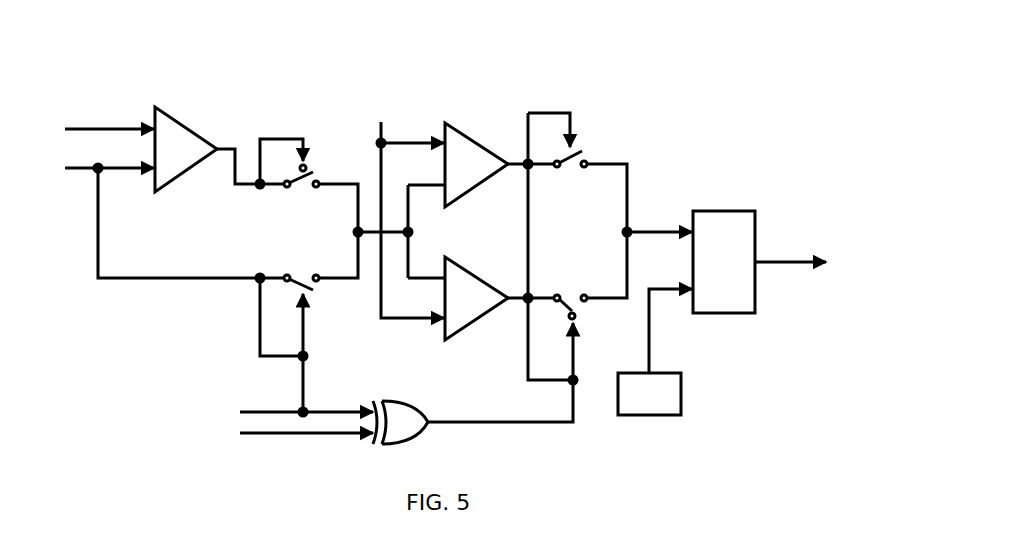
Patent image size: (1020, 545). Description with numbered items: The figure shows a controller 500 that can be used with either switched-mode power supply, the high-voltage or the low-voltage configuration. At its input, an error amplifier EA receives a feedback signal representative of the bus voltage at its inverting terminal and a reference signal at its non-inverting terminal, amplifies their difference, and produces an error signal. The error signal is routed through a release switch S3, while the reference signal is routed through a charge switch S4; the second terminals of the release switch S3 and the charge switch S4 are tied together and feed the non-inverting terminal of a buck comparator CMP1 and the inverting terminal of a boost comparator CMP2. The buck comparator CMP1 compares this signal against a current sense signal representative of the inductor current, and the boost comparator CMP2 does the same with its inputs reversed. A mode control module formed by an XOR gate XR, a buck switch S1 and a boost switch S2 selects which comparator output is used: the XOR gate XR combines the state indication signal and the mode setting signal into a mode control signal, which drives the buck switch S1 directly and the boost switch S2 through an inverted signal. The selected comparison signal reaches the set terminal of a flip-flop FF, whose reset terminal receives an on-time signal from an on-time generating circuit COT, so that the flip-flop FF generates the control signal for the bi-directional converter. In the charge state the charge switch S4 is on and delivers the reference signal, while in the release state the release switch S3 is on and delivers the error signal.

The controller 500 is at (786, 96).
The error amplifier EA is at (186, 149).
The buck comparator CMP1 is at (476, 165).
The boost comparator CMP2 is at (476, 298).
The buck switch S1 is at (567, 140).
The boost switch S2 is at (580, 337).
The release switch S3 is at (299, 163).
The charge switch S4 is at (311, 315).
The XOR gate XR is at (401, 430).
The flip-flop FF is at (724, 262).
The on-time generating circuit COT is at (649, 394).